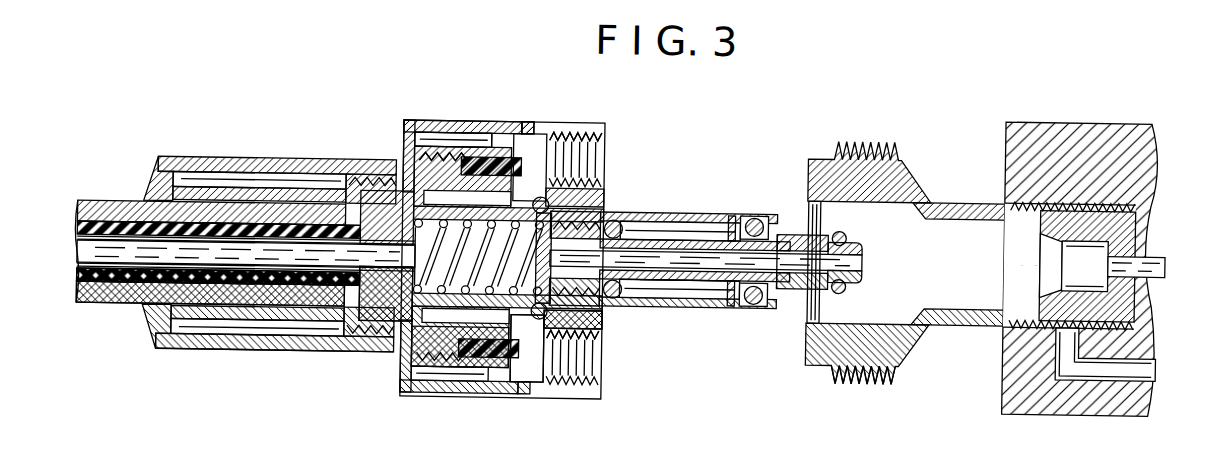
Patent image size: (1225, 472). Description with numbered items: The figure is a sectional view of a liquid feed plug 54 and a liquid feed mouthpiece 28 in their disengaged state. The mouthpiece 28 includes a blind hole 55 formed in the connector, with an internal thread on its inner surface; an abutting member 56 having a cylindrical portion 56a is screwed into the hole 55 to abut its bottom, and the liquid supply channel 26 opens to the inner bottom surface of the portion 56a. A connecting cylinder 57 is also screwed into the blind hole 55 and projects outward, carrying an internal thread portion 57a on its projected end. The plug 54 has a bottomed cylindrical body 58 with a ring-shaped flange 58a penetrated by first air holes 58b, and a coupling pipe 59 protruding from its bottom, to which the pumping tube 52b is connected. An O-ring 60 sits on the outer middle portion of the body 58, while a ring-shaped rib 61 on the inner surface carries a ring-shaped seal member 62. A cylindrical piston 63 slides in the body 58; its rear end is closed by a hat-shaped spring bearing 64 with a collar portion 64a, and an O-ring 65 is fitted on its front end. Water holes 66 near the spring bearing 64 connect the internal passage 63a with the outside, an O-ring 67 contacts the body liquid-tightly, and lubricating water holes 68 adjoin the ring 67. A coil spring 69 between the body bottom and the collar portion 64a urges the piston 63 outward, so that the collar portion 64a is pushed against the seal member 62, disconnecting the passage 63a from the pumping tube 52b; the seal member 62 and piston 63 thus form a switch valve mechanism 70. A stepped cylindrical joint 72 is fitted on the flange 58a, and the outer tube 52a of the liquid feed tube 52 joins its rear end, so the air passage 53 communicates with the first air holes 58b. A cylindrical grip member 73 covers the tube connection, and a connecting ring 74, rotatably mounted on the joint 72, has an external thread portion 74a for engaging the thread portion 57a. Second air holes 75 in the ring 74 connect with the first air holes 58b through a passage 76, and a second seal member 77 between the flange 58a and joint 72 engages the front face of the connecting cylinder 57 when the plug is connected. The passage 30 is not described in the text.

The liquid supply channel 26 is at (1160, 258).
The liquid feed mouthpiece 28 is at (1041, 251).
The passage 30 is at (1129, 362).
The liquid feed tube 52 is at (245, 219).
The outer tube 52a is at (209, 324).
The pumping tube 52b is at (212, 304).
The air passage 53 is at (195, 234).
The liquid feed plug 54 is at (273, 397).
The blind hole 55 is at (1106, 222).
The abutting member 56 is at (1110, 261).
The cylindrical portion 56a is at (1049, 226).
The connecting cylinder 57 is at (917, 250).
The internal thread portion 57a is at (837, 394).
The body 58 is at (479, 246).
The flange 58a is at (427, 126).
The first air holes 58b is at (483, 262).
The coupling pipe 59 is at (245, 313).
The O-ring 60 is at (587, 127).
The rib 61 is at (705, 299).
The seal member 62 is at (621, 283).
The piston 63 is at (694, 302).
The internal passage 63a is at (700, 313).
The spring bearing 64 is at (706, 238).
The collar portion 64a is at (674, 235).
The O-ring 65 is at (810, 235).
The water holes 66 is at (731, 237).
The O-ring 67 is at (768, 316).
The lubricating water holes 68 is at (763, 191).
The coil spring 69 is at (381, 325).
The switch valve mechanism 70 is at (545, 258).
The stepped cylindrical joint 72 is at (454, 119).
The grip member 73 is at (270, 231).
The connecting ring 74 is at (523, 382).
The external thread portion 74a is at (609, 364).
The second air holes 75 is at (553, 104).
The passage 76 is at (569, 373).
The second seal member 77 is at (459, 380).